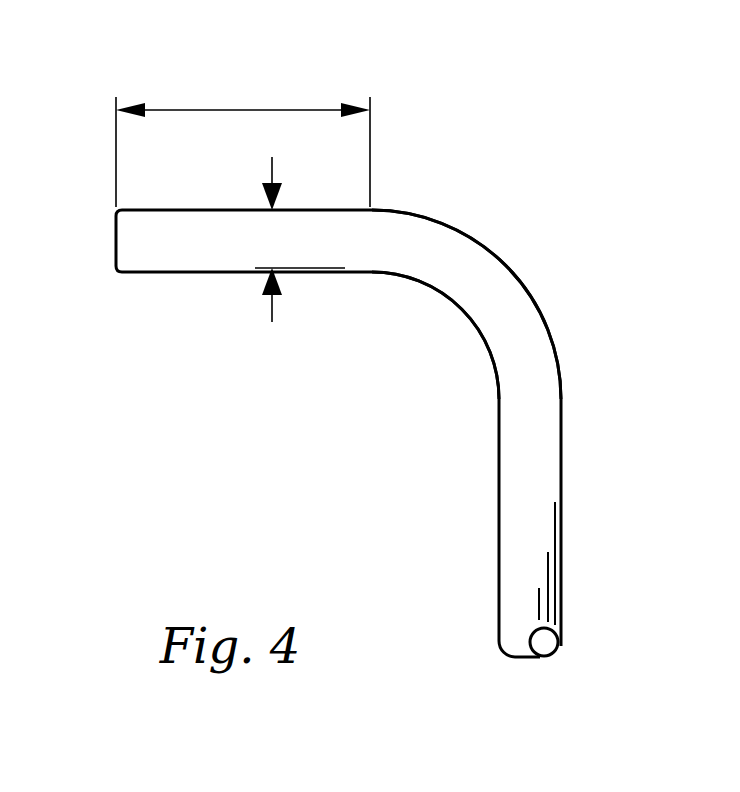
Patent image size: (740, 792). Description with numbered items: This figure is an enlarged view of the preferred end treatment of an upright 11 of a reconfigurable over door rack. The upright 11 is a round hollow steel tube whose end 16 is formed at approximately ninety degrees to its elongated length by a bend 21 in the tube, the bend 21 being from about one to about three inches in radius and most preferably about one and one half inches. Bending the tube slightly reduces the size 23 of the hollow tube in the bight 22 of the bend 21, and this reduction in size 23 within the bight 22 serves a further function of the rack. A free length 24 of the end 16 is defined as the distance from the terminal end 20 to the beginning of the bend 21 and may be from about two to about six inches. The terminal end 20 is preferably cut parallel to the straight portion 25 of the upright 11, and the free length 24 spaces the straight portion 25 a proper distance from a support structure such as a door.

The upright 11 is at (526, 601).
The end 16 is at (226, 449).
The terminal end 20 is at (116, 246).
The bend 21 is at (373, 427).
The bight 22 is at (394, 323).
The size 23 is at (272, 238).
The free length 24 is at (231, 110).
The straight portion 25 is at (540, 538).